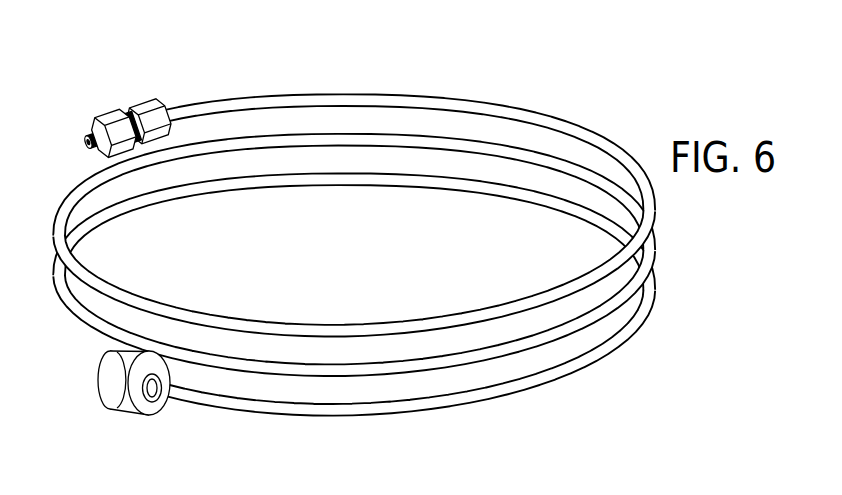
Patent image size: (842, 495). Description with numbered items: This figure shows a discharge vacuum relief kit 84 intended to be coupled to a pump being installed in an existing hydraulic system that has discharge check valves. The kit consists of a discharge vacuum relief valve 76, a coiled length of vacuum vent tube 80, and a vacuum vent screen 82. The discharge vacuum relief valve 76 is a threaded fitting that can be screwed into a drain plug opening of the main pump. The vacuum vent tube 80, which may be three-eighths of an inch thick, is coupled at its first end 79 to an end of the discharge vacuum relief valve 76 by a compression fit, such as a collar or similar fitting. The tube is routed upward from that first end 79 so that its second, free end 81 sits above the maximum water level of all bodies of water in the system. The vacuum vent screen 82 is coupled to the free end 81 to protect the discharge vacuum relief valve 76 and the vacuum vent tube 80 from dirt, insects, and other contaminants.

The discharge vacuum relief valve 76 is at (110, 120).
The first end 79 is at (178, 97).
The vacuum vent tube 80 is at (310, 326).
The free end 81 is at (166, 418).
The vacuum vent screen 82 is at (111, 395).
The discharge vacuum relief kit 84 is at (354, 248).